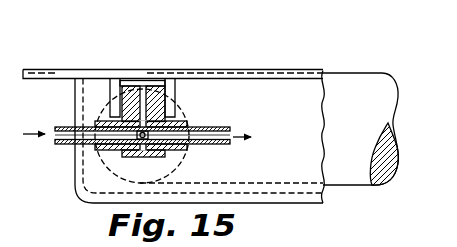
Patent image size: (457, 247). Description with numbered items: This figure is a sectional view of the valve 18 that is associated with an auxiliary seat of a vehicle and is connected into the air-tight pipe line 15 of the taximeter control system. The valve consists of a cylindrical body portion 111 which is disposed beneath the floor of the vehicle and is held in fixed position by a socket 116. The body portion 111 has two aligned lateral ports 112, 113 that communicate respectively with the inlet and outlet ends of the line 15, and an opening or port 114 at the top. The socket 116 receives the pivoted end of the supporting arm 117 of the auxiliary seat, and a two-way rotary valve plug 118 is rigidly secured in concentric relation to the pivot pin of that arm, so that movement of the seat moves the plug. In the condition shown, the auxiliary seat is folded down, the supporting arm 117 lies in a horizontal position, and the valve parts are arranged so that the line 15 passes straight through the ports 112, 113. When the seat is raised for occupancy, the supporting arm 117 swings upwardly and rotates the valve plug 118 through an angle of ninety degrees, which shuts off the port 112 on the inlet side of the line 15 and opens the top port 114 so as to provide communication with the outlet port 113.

The line 15 is at (58, 145).
The valve 18 is at (116, 168).
The cylindrical body portion 111 is at (167, 78).
The lateral port 112 is at (97, 123).
The lateral port 113 is at (186, 124).
The opening or port 114 is at (146, 85).
The socket 116 is at (117, 68).
The supporting arm 117 is at (388, 67).
The two-way rotary valve plug 118 is at (163, 158).